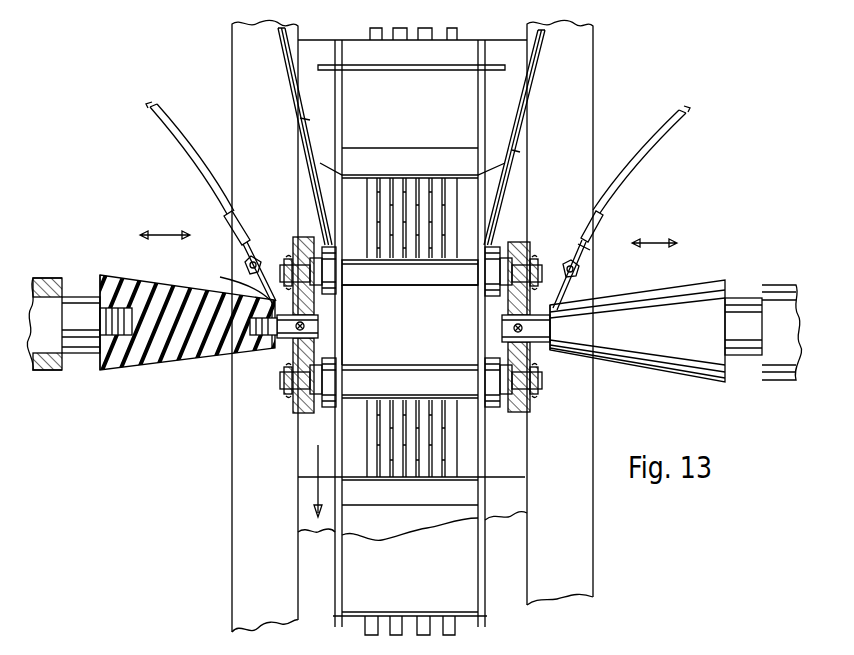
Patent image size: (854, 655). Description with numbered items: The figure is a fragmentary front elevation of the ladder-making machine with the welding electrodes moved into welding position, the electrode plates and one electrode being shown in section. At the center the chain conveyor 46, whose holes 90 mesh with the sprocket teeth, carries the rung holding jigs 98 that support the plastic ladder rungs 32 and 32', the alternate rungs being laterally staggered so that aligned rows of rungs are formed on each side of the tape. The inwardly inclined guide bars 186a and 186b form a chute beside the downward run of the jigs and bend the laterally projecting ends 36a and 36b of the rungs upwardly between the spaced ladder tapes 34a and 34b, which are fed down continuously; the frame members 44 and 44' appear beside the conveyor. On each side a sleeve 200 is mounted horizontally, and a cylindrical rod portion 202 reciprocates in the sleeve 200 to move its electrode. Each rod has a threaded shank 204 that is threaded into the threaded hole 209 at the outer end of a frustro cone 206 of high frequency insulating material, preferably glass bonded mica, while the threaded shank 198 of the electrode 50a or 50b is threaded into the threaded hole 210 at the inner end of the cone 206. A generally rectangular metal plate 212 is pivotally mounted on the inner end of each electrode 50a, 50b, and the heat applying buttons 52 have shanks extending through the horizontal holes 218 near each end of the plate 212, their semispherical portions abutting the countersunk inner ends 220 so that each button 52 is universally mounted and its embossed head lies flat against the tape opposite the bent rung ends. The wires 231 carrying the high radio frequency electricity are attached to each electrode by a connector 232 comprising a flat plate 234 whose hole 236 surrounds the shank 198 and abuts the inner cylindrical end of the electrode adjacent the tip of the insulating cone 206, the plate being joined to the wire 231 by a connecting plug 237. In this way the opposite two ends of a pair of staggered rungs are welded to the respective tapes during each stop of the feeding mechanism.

The bent end 36a is at (318, 62).
The bent end 36b is at (528, 66).
The rung holding jig 98 is at (463, 50).
The plastic ladder rung 32 is at (411, 262).
The plastic ladder rung 32' is at (410, 273).
The rack frame 44 is at (412, 333).
The rack frame section 44' is at (369, 321).
The chain conveyor 46 is at (372, 204).
The holes 90 is at (418, 210).
The ladder tape 34a is at (310, 100).
The ladder tape 34b is at (505, 123).
The inwardly inclined guide bar 186a is at (305, 120).
The inwardly inclined guide bar 186b is at (517, 152).
The wire 231 is at (210, 177).
The connector 232 is at (245, 270).
The connecting plug 237 is at (585, 256).
The hole 236 is at (245, 300).
The metal plate 212 is at (295, 405).
The heat applying button 52 is at (322, 252).
The flat plate 234 is at (300, 262).
The horizontal hole 218 is at (520, 395).
The countersunk inner end 220 is at (513, 390).
The threaded hole 210 is at (246, 338).
The threaded shank 198 is at (233, 347).
The frustro cone 206 is at (187, 356).
The threaded shank 204 is at (117, 350).
The threaded hole 209 is at (100, 350).
The electrode 50a is at (220, 284).
The electrode 50b is at (555, 310).
The sleeve 200 is at (50, 278).
The cylindrical rod portion 202 is at (85, 295).